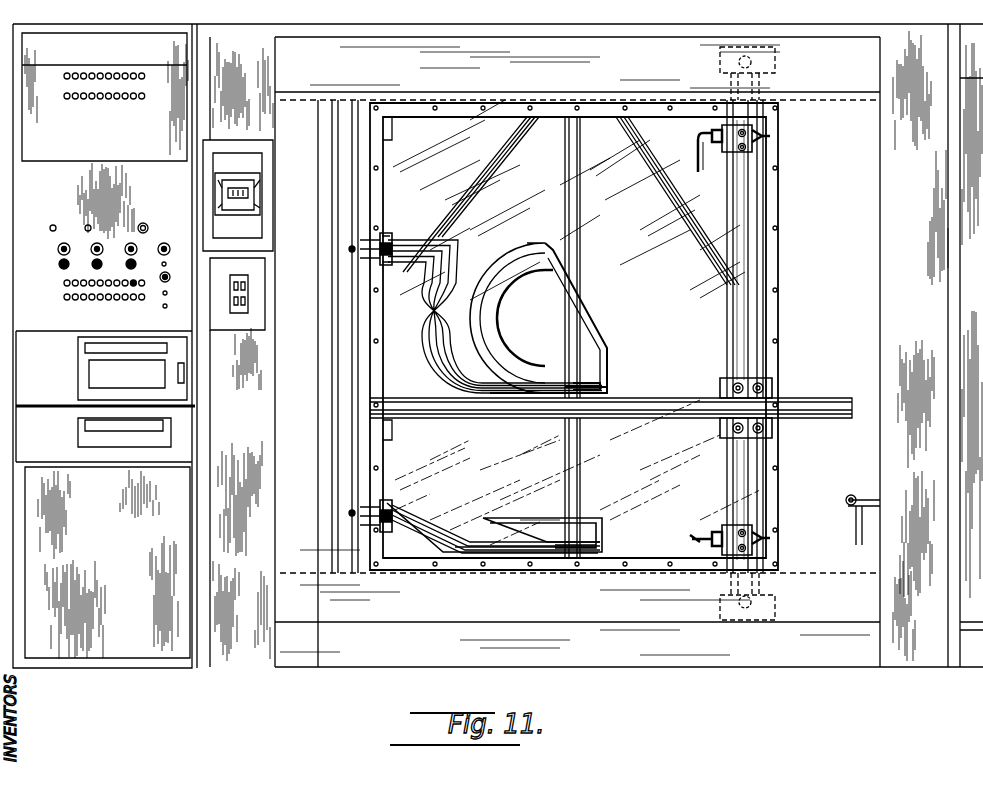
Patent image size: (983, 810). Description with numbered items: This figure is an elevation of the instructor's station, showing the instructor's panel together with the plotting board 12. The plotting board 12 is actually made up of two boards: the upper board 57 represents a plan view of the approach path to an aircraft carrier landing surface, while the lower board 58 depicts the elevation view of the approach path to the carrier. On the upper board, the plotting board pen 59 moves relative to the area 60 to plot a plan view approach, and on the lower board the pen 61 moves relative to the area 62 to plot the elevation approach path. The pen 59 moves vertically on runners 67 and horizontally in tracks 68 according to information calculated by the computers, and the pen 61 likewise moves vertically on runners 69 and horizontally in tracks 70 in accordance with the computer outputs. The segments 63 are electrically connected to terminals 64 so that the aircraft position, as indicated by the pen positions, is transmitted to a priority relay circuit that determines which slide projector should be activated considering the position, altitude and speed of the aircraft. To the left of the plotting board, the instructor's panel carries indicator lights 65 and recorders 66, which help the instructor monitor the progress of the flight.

The plotting board 12 is at (593, 71).
The upper board 57 is at (641, 232).
The lower board 58 is at (657, 476).
The plotting board pen 59 is at (700, 150).
The area 60 is at (607, 386).
The pen 61 is at (705, 532).
The area 62 is at (598, 536).
The segments 63 is at (492, 345).
The terminals 64 is at (372, 258).
The indicator lights 65 is at (100, 299).
The recorders 66 is at (78, 430).
The runners 67 is at (728, 344).
The tracks 68 is at (796, 42).
The runners 69 is at (730, 482).
The tracks 70 is at (815, 418).